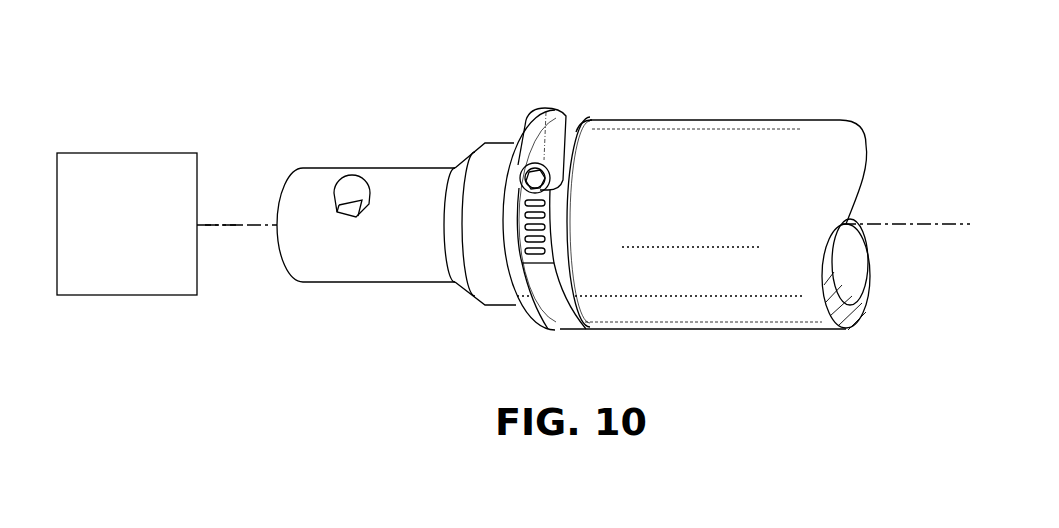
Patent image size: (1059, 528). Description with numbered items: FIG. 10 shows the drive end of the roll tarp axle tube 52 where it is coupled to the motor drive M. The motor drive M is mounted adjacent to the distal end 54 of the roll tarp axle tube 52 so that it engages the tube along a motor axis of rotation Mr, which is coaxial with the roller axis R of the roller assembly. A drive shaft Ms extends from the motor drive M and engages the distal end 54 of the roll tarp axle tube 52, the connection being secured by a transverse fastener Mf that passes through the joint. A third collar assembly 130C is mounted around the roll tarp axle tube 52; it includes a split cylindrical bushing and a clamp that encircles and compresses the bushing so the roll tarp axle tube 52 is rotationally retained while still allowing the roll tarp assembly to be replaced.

The motor drive M is at (137, 228).
The drive shaft Ms is at (237, 227).
The motor axis of rotation Mr is at (216, 225).
The transverse fastener Mf is at (350, 182).
The distal end 54 is at (345, 268).
The third collar assembly 130C is at (543, 115).
The roll tarp axle tube 52 is at (855, 152).
The roller axis R is at (923, 224).